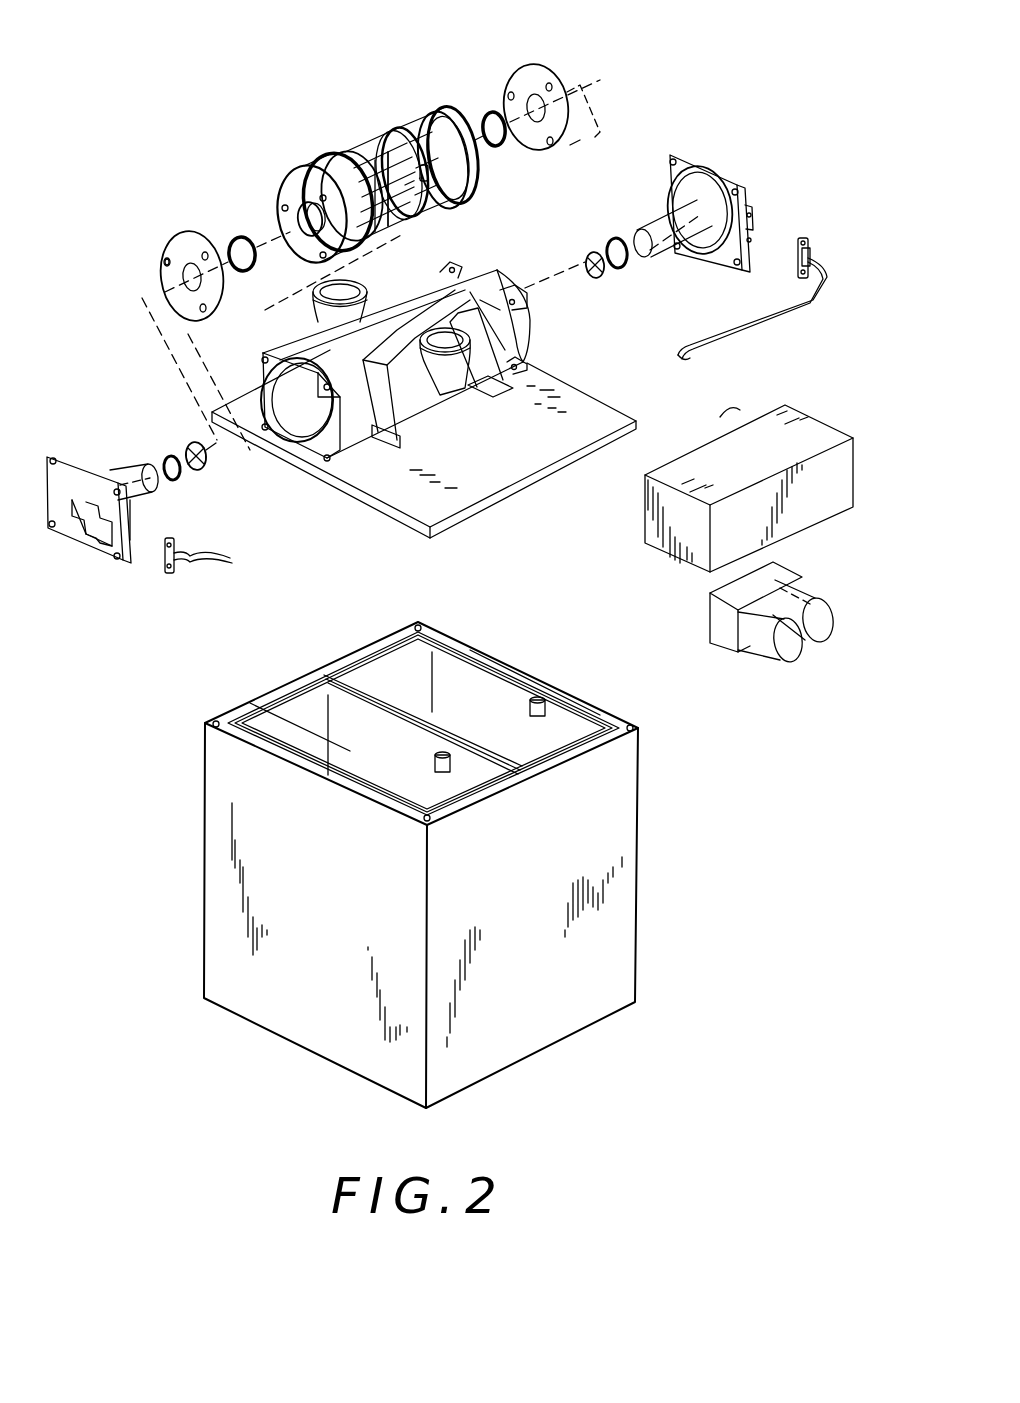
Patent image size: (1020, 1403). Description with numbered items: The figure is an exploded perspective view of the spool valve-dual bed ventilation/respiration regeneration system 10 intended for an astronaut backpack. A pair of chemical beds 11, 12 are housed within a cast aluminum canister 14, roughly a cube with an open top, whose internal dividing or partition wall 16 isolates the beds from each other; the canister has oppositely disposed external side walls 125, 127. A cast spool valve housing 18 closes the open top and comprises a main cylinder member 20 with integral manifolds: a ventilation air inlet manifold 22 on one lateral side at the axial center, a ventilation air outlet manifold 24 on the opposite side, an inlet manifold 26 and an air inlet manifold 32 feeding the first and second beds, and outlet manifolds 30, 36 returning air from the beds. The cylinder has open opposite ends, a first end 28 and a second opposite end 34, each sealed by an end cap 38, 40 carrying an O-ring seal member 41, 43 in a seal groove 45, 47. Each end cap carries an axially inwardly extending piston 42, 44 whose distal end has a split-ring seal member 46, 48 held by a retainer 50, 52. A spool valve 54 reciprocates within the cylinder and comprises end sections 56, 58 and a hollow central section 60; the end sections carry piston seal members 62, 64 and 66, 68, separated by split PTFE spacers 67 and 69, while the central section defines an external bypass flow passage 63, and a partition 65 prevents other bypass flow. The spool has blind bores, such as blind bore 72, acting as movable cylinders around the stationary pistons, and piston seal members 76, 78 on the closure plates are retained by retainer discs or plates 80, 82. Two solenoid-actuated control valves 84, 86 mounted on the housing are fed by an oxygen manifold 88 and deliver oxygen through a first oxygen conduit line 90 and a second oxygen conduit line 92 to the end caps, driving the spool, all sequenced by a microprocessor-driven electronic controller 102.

The spool valve-dual bed ventilation/respiration regeneration system 10 is at (175, 735).
The chemical bed 11 is at (547, 733).
The chemical bed 12 is at (428, 778).
The canister 14 is at (542, 1000).
The internal dividing or partition wall 16 is at (432, 717).
The spool valve housing 18 is at (235, 378).
The main cylinder member 20 is at (463, 293).
The ventilation air inlet manifold 22 is at (250, 272).
The ventilation air outlet manifold 24 is at (523, 330).
The inlet manifold 26 is at (407, 287).
The first end 28 is at (527, 313).
The outlet manifold 30 is at (500, 377).
The air inlet manifold 32 is at (287, 343).
The second opposite end 34 is at (300, 447).
The outlet manifold 36 is at (400, 413).
The end cap 38 is at (712, 175).
The end cap 40 is at (63, 493).
The O-ring seal member 41 is at (733, 183).
The piston 42 is at (662, 225).
The O-ring seal member 43 is at (102, 470).
The piston 44 is at (143, 487).
The seal groove 45 is at (753, 258).
The split-ring seal member 46 is at (623, 263).
The seal groove 47 is at (85, 468).
The split-ring seal member 48 is at (170, 452).
The retainer 50 is at (608, 280).
The retainer 52 is at (197, 470).
The spool valve 54 is at (447, 112).
The end section 56 is at (462, 173).
The end section 58 is at (317, 167).
The central section 60 is at (437, 202).
The piston seal member 62 is at (572, 150).
The external bypass flow passage 63 is at (363, 147).
The piston seal member 64 is at (418, 130).
The partition 65 is at (357, 157).
The piston seal member 66 is at (300, 180).
The split PTFE spacer 67 is at (445, 110).
The piston seal member 68 is at (328, 152).
The split PTFE spacer 69 is at (350, 232).
The blind bore 72 is at (297, 230).
The piston seal member 76 is at (488, 110).
The piston seal member 78 is at (198, 226).
The retainer disc or plate 80 is at (590, 86).
The retainer disc or plate 82 is at (158, 260).
The solenoid-actuated control valve 84 is at (823, 625).
The solenoid-actuated control valve 86 is at (792, 648).
The oxygen manifold 88 is at (770, 575).
The first oxygen conduit line 90 is at (777, 312).
The second oxygen conduit line 92 is at (200, 557).
The microprocessor-driven electronic controller 102 is at (716, 477).
The external side wall 125 is at (330, 907).
The external side wall 127 is at (474, 742).